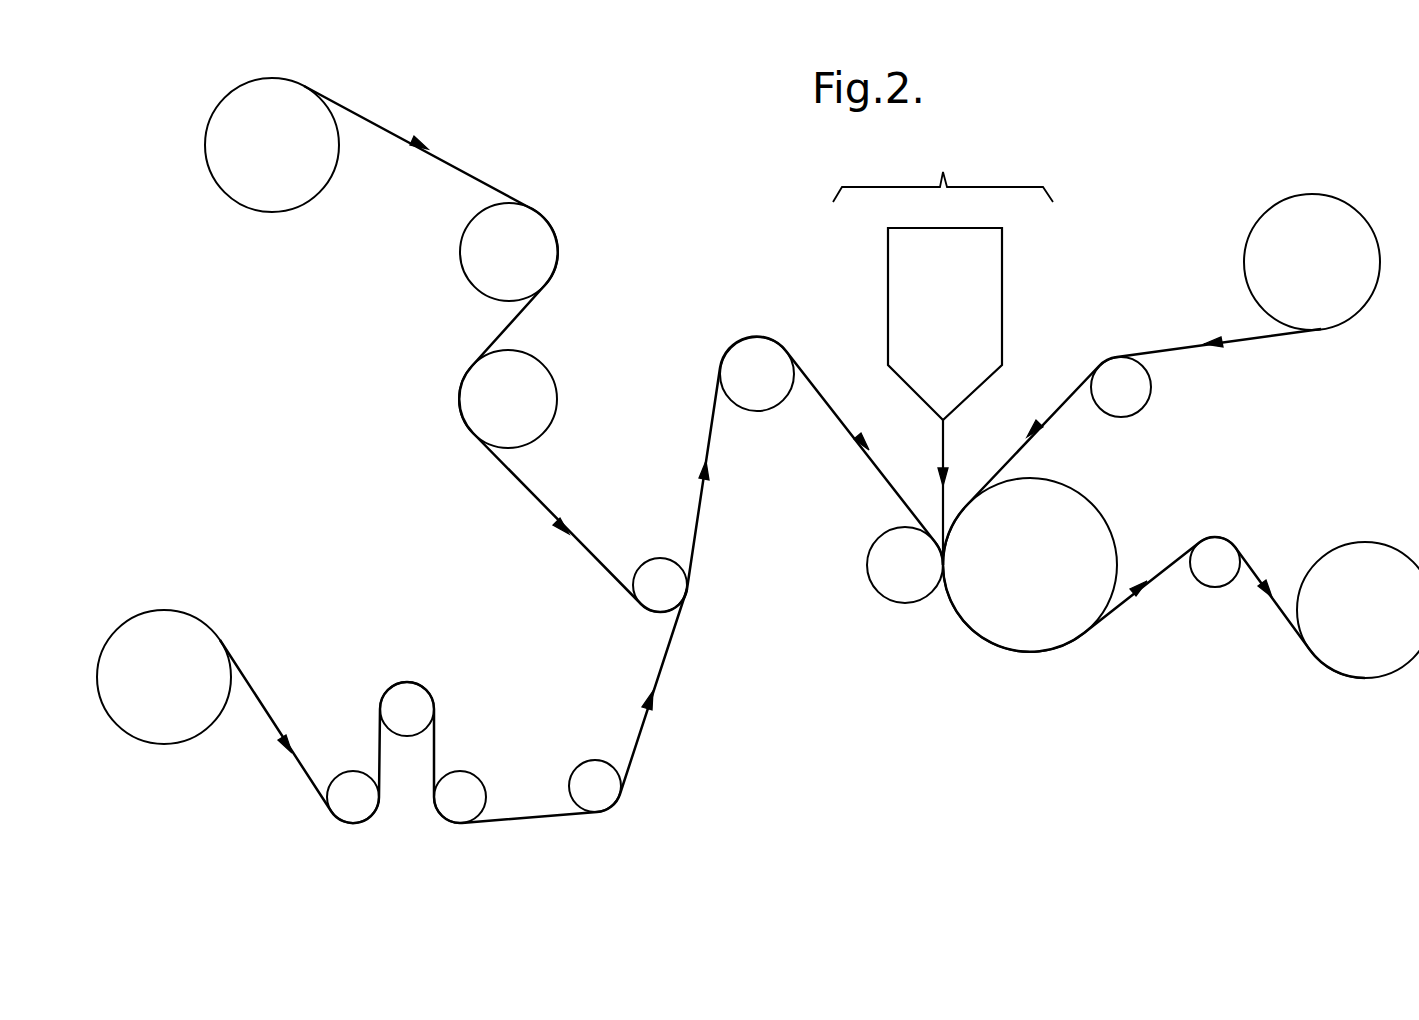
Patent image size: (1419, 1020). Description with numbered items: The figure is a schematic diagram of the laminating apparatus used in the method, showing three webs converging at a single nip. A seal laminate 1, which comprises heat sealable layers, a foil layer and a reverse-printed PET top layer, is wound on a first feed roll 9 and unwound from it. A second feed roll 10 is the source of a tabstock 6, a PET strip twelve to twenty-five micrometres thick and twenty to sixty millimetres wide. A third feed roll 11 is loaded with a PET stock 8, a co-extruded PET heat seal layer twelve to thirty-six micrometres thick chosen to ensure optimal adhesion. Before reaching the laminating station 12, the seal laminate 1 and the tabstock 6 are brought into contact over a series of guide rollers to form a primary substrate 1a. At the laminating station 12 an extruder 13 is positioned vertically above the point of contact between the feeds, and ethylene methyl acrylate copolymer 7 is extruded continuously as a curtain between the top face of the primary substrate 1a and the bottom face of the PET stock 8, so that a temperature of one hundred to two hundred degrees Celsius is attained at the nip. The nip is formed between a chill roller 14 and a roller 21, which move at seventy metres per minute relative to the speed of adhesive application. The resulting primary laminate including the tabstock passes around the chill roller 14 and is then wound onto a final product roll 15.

The seal laminate 1 is at (253, 689).
The primary substrate 1a is at (698, 500).
The tabstock 6 is at (447, 155).
The ethylene methyl acrylate copolymer 7 is at (943, 438).
The PET stock 8 is at (1195, 348).
The first feed roll 9 is at (165, 733).
The second feed roll 10 is at (290, 92).
The third feed roll 11 is at (1357, 213).
The laminating station 12 is at (943, 174).
The extruder 13 is at (1002, 293).
The chill roller 14 is at (1032, 643).
The final product roll 15 is at (1370, 663).
The roller 21 is at (878, 567).